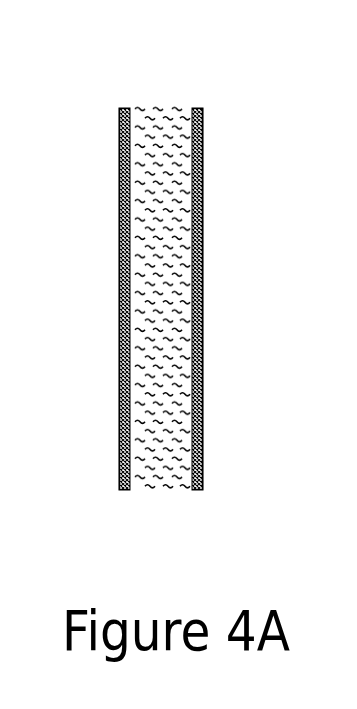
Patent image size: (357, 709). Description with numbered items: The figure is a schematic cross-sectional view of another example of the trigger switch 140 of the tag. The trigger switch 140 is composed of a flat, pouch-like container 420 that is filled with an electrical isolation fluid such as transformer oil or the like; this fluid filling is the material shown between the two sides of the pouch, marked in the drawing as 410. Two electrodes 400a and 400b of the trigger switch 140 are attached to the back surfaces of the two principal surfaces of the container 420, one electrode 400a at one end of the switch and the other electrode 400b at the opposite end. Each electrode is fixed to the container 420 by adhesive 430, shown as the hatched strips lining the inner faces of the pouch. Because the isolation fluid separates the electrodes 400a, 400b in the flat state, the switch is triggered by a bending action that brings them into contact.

The trigger switch 140 is at (143, 300).
The electrode 400a is at (197, 107).
The electrode 400b is at (127, 492).
The separator / electrolyte layer 410 is at (155, 105).
The container 420 is at (120, 127).
The adhesive 430 is at (125, 107).